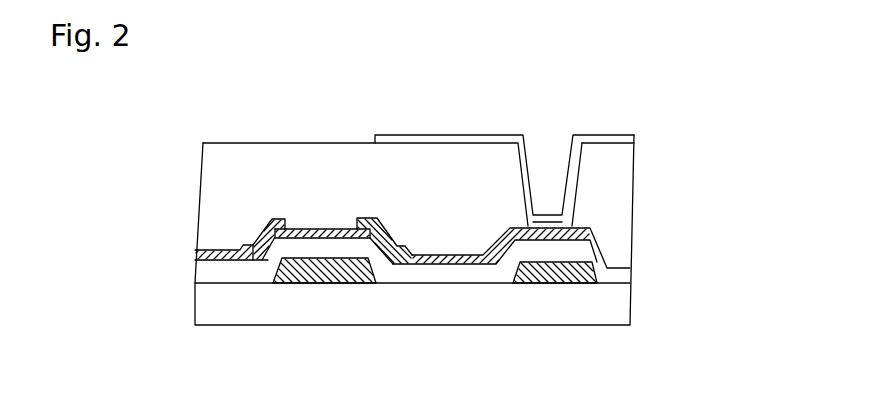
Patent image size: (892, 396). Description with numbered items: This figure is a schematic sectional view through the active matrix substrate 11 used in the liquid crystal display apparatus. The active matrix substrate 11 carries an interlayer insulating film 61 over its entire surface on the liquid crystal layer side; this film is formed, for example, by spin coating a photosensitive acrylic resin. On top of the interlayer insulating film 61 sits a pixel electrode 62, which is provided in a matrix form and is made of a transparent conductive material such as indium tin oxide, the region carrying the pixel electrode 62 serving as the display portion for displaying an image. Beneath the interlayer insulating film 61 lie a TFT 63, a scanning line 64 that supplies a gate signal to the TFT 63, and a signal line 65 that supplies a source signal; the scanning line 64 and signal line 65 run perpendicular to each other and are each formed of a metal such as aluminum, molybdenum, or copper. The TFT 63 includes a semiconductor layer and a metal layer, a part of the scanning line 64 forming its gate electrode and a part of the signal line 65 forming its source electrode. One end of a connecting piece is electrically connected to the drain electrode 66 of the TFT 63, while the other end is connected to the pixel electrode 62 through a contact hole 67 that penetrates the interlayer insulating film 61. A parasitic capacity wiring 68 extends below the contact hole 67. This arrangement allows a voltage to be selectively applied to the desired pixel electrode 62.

The active matrix substrate 11 is at (618, 308).
The interlayer insulating film 61 is at (465, 175).
The pixel electrode 62 is at (524, 141).
The TFT 63 is at (320, 222).
The scanning line 64 is at (328, 280).
The signal line 65 is at (258, 233).
The drain electrode 66 is at (367, 217).
The contact hole 67 is at (550, 198).
The parasitic capacity wiring 68 is at (560, 283).